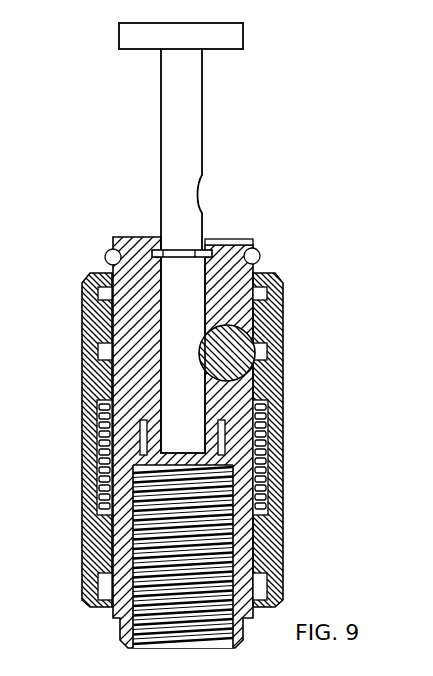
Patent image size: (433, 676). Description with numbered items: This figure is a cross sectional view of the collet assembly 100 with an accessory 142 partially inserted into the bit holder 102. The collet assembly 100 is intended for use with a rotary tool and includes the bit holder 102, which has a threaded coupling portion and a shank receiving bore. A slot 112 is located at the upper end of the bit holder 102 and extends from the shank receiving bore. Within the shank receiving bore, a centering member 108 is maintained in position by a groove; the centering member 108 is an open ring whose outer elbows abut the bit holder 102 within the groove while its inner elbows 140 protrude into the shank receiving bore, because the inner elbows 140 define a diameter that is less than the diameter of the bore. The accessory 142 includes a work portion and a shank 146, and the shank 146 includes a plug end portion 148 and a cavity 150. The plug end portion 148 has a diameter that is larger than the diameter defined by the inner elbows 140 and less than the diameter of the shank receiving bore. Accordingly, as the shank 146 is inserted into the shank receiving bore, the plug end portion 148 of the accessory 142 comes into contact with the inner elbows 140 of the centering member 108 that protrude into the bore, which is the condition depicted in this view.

The collet assembly 100 is at (322, 344).
The bit holder 102 is at (222, 240).
The centering member 108 is at (180, 258).
The slot 112 is at (253, 243).
The inner elbows 140 is at (160, 262).
The accessory 142 is at (277, 74).
The shank 146 is at (161, 152).
The plug end portion 148 is at (160, 250).
The cavity 150 is at (160, 376).